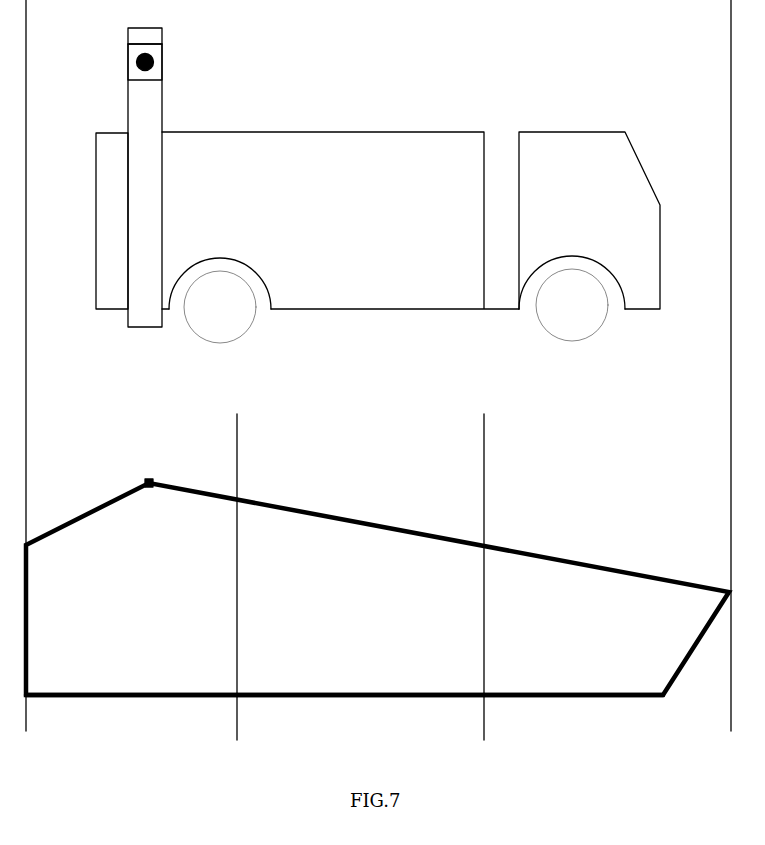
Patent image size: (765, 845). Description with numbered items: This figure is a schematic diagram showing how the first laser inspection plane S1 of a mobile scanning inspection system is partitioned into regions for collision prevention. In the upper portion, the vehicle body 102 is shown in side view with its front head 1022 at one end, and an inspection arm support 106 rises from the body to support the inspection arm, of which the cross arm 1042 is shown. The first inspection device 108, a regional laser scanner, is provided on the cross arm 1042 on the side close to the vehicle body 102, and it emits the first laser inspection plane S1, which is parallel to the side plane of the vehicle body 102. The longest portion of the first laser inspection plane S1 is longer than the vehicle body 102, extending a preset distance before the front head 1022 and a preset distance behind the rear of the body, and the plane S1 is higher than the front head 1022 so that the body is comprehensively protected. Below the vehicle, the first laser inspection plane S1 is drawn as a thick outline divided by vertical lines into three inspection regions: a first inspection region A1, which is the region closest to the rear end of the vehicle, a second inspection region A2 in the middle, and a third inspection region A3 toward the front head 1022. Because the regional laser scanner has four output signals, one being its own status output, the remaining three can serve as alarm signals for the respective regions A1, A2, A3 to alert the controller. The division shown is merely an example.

The vehicle body 102 is at (340, 146).
The front head 1022 is at (585, 148).
The inspection arm support 106 is at (145, 165).
The cross arm 1042 is at (131, 55).
The first inspection device 108 is at (150, 53).
The first laser inspection plane S1 is at (344, 516).
The first inspection region A1 is at (130, 678).
The second inspection region A2 is at (360, 678).
The third inspection region A3 is at (585, 678).